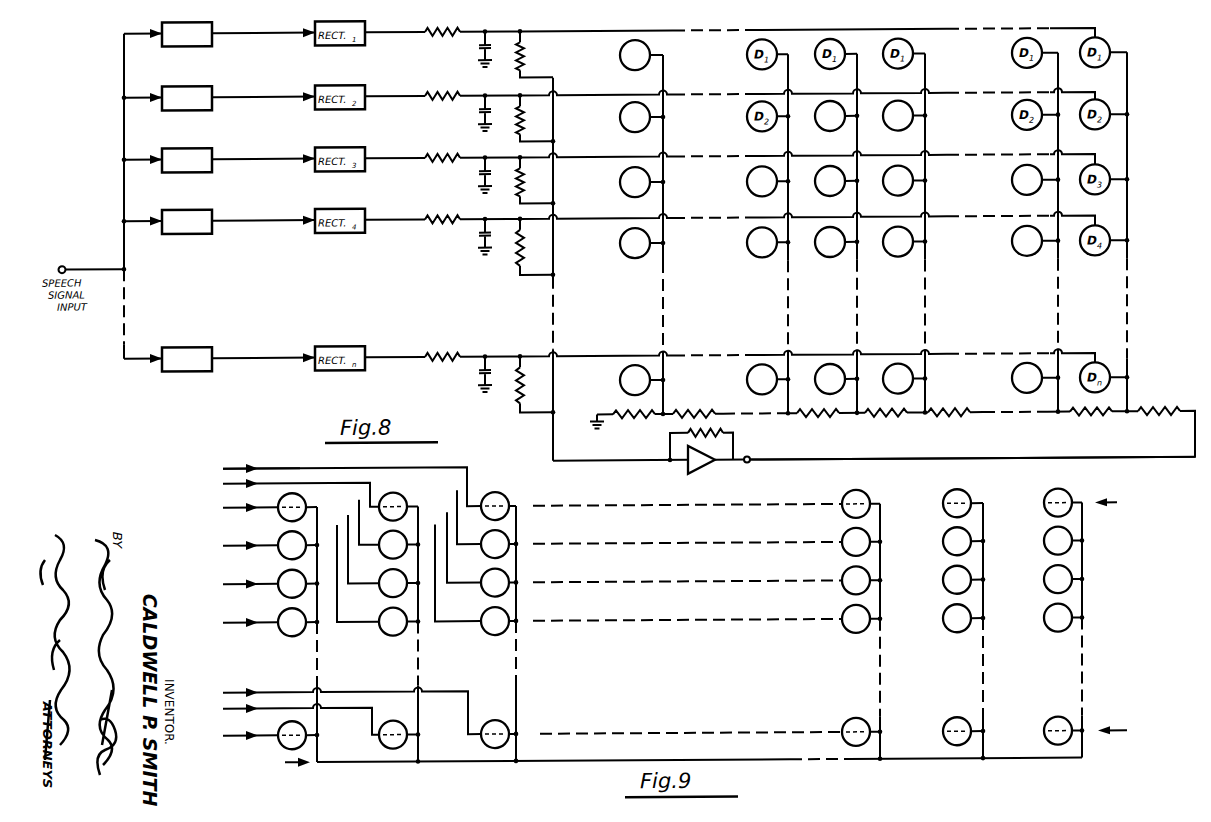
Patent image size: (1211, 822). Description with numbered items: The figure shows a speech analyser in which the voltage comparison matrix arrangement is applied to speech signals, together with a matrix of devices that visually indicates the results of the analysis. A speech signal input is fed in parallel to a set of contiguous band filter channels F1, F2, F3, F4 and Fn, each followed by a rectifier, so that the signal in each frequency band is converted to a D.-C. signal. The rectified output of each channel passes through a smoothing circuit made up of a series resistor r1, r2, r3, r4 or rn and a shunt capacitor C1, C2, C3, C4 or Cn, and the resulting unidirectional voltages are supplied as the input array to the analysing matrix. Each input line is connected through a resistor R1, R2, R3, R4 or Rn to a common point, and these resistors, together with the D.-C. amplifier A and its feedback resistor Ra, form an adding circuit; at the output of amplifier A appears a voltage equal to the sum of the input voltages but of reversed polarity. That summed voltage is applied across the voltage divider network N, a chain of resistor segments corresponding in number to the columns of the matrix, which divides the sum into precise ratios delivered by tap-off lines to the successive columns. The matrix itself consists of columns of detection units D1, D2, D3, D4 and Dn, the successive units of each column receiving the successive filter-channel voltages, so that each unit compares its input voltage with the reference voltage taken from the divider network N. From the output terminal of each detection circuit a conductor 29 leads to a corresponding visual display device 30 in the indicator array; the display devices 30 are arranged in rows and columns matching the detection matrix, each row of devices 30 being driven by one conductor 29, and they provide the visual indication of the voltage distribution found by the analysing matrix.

In FIG. 8, the band filter F1 is at (187, 34).
In FIG. 8, the band filter F2 is at (187, 98).
In FIG. 8, the band filter F3 is at (187, 160).
In FIG. 8, the band filter F4 is at (187, 222).
In FIG. 8, the band filter Fn is at (187, 359).
In FIG. 8, the smoothing circuit resistor r1 is at (432, 0).
In FIG. 8, the smoothing circuit resistor r2 is at (442, 90).
In FIG. 8, the smoothing circuit resistor r3 is at (442, 152).
In FIG. 8, the smoothing circuit resistor r4 is at (442, 213).
In FIG. 8, the smoothing circuit resistor rn is at (442, 351).
In FIG. 8, the smoothing circuit capacitor C1 is at (480, 14).
In FIG. 8, the smoothing circuit capacitor C2 is at (474, 112).
In FIG. 8, the smoothing circuit capacitor C3 is at (474, 174).
In FIG. 8, the smoothing circuit capacitor C4 is at (474, 236).
In FIG. 8, the smoothing circuit capacitor Cn is at (474, 373).
In FIG. 8, the input resistor R1 is at (524, 22).
In FIG. 8, the input resistor R2 is at (535, 118).
In FIG. 8, the input resistor R3 is at (535, 180).
In FIG. 8, the input resistor R4 is at (535, 246).
In FIG. 8, the input resistor Rn is at (535, 384).
In FIG. 8, the detection unit D1 is at (635, 55).
In FIG. 8, the detection unit D2 is at (635, 117).
In FIG. 8, the detection unit D3 is at (635, 182).
In FIG. 8, the detection unit D4 is at (635, 243).
In FIG. 8, the detection unit Dn is at (635, 380).
In FIG. 8, the feedback resistor Ra is at (732, 434).
In FIG. 8, the D.-C. amplifier A is at (701, 460).
In FIG. 8, the voltage divider network N is at (962, 422).
In FIG. 9, the conductor 29 is at (443, 470).
In FIG. 9, the visual display device 30 is at (514, 491).